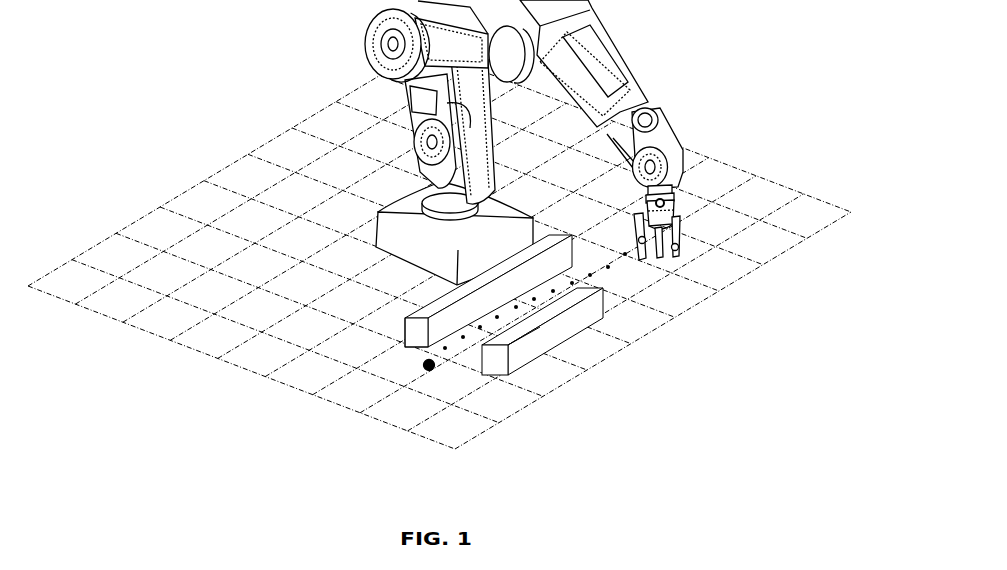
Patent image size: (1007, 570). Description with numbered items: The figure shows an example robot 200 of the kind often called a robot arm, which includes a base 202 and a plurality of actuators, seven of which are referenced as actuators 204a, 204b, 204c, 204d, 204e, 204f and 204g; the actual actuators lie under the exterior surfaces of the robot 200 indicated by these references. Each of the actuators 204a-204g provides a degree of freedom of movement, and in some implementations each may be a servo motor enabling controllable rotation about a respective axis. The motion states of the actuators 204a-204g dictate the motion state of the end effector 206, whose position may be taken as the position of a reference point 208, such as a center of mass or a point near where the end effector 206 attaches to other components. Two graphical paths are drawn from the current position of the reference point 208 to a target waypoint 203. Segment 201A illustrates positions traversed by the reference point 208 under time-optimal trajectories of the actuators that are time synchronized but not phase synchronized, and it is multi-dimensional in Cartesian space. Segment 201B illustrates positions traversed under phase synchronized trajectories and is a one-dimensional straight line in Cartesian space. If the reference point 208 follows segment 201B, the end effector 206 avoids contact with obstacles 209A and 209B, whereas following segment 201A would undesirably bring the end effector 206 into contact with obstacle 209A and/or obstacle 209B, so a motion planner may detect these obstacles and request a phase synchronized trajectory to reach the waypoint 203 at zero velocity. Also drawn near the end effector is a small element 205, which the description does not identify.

The robot 200 is at (338, 18).
The segment 201A is at (610, 267).
The segment 201B is at (460, 345).
The base 202 is at (417, 257).
The target waypoint 203 is at (430, 372).
The actuator 204a is at (674, 193).
The actuator 204b is at (650, 168).
The actuator 204c is at (650, 119).
The actuator 204d is at (502, 50).
The actuator 204e is at (391, 47).
The actuator 204f is at (440, 143).
The actuator 204g is at (440, 217).
The sensor 205 is at (668, 203).
The end effector 206 is at (680, 222).
The reference point 208 is at (667, 224).
The obstacle 209A is at (403, 332).
The obstacle 209B is at (555, 348).